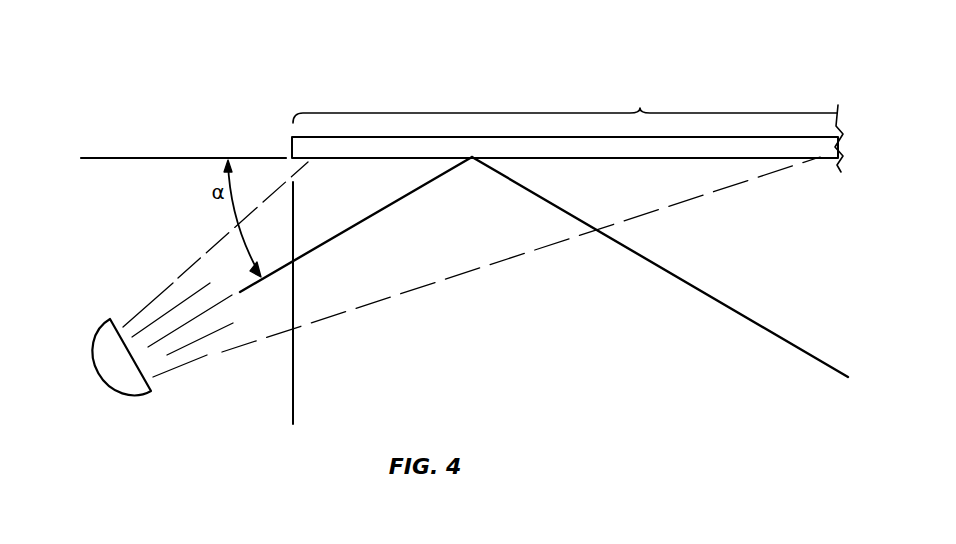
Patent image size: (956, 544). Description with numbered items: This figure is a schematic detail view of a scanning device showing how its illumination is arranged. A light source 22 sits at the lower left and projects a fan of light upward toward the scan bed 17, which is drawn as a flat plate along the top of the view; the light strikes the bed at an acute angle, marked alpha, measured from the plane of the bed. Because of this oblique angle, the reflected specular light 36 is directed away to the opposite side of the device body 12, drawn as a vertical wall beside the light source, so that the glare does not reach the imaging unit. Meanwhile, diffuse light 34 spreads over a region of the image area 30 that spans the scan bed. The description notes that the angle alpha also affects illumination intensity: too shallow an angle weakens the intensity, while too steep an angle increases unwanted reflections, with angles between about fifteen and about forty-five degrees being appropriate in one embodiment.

The device body 12 is at (293, 393).
The scan bed 17 is at (822, 148).
The light source 22 is at (99, 376).
The image area 30 is at (565, 120).
The diffuse light 34 is at (442, 282).
The reflected specular light 36 is at (723, 302).